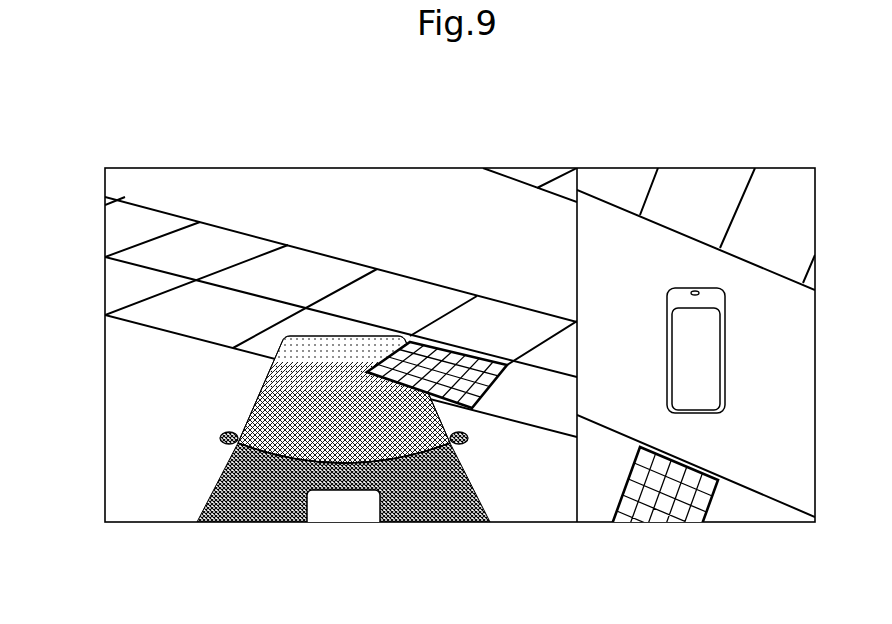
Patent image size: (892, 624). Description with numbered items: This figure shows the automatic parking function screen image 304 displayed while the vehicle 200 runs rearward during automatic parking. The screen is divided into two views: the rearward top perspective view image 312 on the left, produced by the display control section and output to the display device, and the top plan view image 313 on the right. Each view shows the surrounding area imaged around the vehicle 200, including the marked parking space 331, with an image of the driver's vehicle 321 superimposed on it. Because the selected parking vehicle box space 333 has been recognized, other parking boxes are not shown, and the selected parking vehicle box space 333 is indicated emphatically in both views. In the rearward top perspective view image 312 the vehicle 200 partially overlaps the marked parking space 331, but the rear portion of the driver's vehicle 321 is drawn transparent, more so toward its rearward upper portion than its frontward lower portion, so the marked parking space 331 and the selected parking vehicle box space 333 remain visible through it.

The automatic parking function screen image 304 is at (138, 128).
The rearward top perspective view image 312 is at (105, 540).
The top plan view image 313 is at (817, 540).
The marked parking space 331 is at (257, 345).
The driver's vehicle 321 is at (344, 287).
The vehicle 200 is at (330, 360).
The selected parking vehicle box space 333 is at (473, 347).